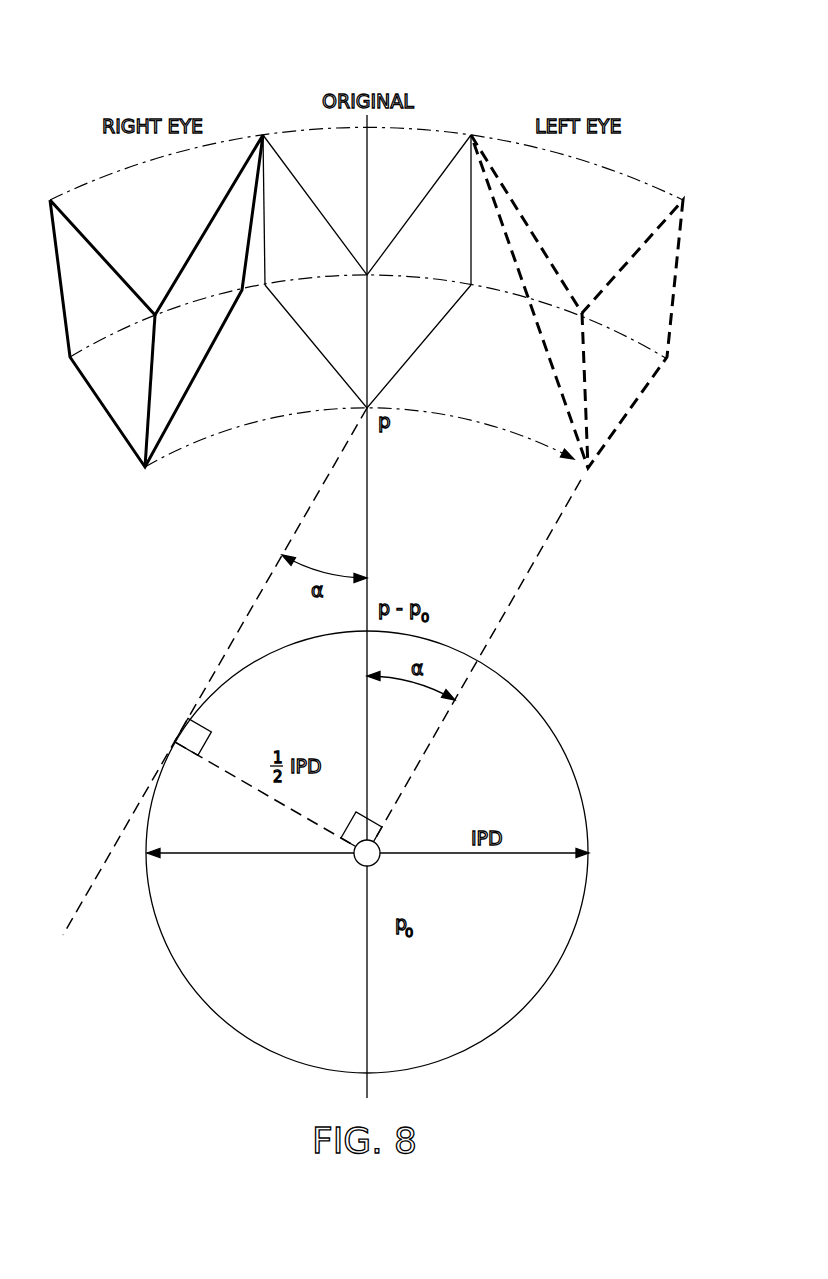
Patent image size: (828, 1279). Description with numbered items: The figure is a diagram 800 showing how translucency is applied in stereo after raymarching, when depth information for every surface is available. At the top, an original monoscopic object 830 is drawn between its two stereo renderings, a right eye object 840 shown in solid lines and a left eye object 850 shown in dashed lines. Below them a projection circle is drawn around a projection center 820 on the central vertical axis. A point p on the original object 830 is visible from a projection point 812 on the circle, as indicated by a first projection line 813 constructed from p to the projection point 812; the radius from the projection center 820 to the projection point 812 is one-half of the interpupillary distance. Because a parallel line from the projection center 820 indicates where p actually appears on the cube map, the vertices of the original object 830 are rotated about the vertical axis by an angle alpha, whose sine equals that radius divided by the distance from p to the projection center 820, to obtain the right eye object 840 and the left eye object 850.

The diagram 800 is at (143, 62).
The projection point 812 is at (173, 740).
The first projection line 813 is at (244, 622).
The projection center 820 is at (376, 864).
The object 830 is at (316, 348).
The right eye object 840 is at (102, 417).
The left eye object 850 is at (635, 402).